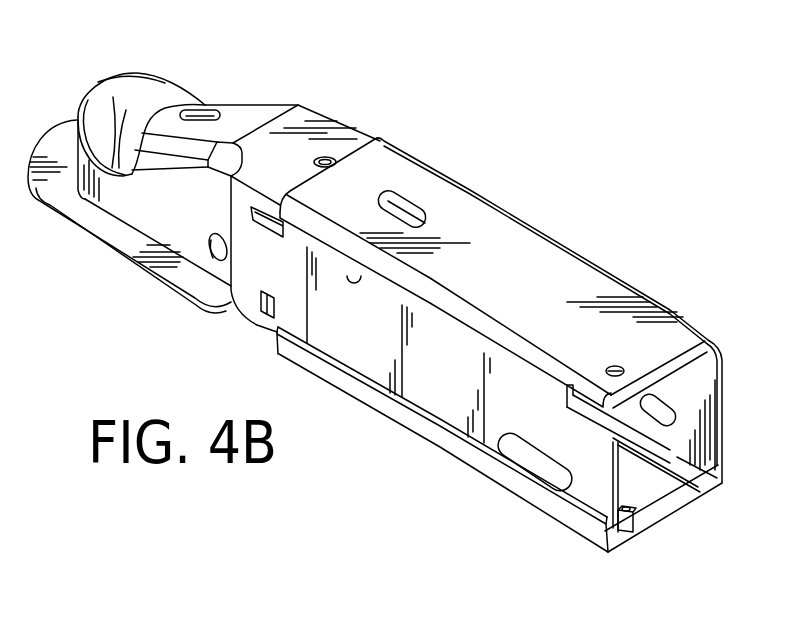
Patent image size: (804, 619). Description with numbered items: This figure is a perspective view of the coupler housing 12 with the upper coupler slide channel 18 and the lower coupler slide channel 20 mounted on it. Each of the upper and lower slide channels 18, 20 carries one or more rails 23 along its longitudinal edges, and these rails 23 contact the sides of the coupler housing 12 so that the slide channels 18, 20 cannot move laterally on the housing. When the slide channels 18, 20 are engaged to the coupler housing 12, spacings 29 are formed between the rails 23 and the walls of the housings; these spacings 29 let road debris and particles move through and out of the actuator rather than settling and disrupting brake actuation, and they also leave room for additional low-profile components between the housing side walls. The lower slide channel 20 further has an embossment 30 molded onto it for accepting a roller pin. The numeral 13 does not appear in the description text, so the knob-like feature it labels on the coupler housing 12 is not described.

The coupler housing 12 is at (362, 122).
The knob 13 is at (118, 92).
The upper coupler slide channel 18 is at (538, 226).
The lower coupler slide channel 20 is at (450, 455).
The rails 23 is at (675, 313).
The spacings 29 is at (290, 325).
The embossment 30 is at (637, 512).